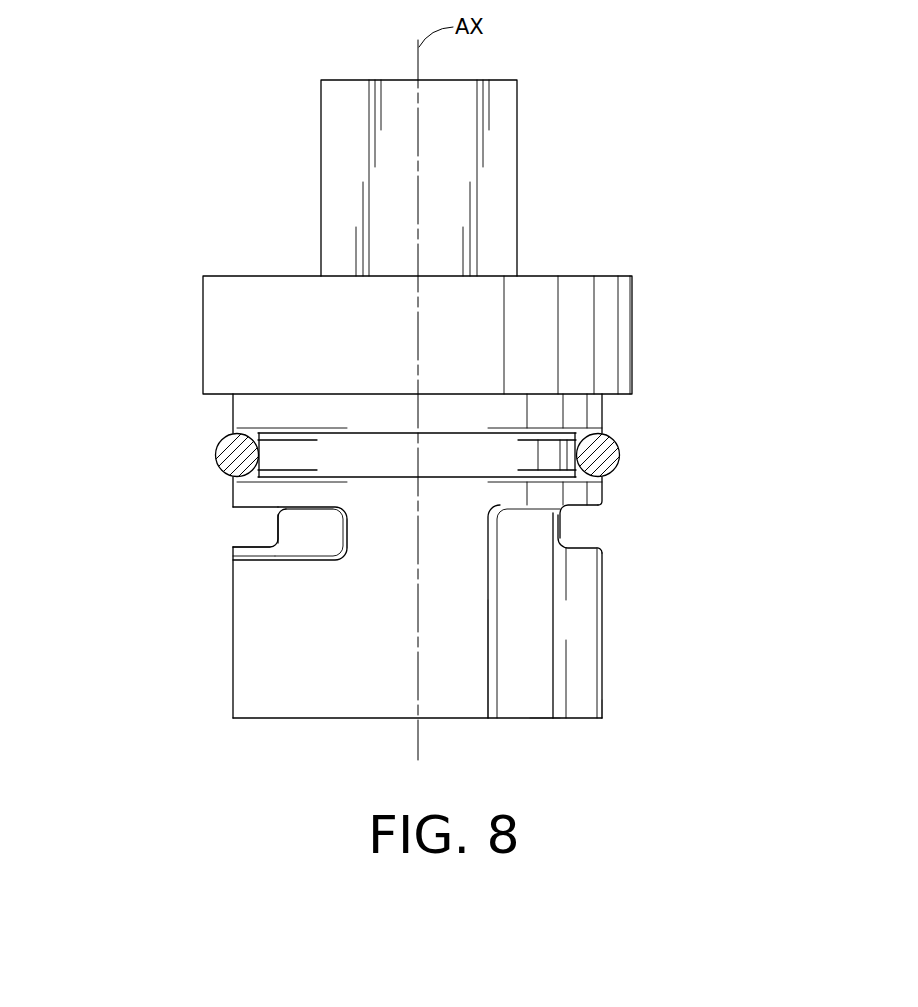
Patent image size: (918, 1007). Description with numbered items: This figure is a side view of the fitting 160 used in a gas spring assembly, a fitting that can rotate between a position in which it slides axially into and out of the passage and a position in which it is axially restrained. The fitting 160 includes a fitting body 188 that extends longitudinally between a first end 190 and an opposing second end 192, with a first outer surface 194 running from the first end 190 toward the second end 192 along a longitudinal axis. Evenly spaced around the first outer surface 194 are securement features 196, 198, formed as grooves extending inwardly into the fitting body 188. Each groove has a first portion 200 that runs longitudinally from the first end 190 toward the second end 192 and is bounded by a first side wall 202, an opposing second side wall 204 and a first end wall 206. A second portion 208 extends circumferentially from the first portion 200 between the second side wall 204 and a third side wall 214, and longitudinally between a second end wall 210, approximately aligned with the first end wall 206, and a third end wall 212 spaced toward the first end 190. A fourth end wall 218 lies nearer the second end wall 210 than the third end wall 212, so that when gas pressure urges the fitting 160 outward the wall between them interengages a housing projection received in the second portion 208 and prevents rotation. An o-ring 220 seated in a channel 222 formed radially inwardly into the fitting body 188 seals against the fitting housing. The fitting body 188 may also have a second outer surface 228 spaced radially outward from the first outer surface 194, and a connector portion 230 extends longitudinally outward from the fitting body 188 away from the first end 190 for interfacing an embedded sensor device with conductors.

The fitting 160 is at (625, 118).
The fitting body 188 is at (614, 493).
The first end 190 is at (615, 713).
The second end 192 is at (642, 330).
The first outer surface 194 is at (233, 690).
The securement feature 196 is at (198, 528).
The securement feature 198 is at (542, 729).
The first portion 200 is at (534, 647).
The first side wall 202 is at (488, 670).
The second side wall 204 is at (582, 675).
The first end wall 206 is at (525, 508).
The second portion 208 is at (290, 542).
The second end wall 210 is at (278, 500).
The third end wall 212 is at (273, 558).
The third side wall 214 is at (348, 537).
The fourth end wall 218 is at (587, 545).
The o-ring 220 is at (614, 440).
The channel 222 is at (307, 460).
The second outer surface 228 is at (203, 311).
The connector portion 230 is at (321, 180).